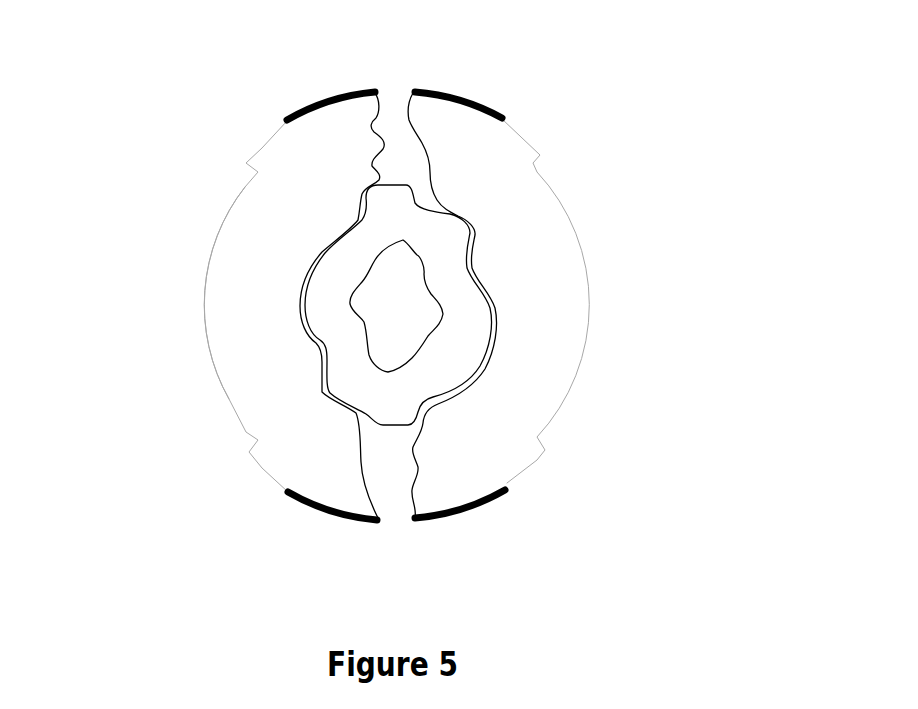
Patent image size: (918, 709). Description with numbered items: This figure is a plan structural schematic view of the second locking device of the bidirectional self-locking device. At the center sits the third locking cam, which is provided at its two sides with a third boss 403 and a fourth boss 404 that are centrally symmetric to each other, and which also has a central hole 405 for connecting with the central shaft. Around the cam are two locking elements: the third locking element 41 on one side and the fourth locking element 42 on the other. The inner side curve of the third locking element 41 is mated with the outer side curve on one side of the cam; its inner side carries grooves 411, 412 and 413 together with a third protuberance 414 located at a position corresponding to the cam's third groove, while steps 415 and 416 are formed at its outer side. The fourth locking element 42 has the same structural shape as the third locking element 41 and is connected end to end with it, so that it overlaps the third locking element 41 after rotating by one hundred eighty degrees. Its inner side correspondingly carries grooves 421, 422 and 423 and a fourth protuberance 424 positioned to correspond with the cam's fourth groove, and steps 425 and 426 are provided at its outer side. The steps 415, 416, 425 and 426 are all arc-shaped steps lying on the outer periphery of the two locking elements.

The third locking element 41 is at (552, 375).
The fourth locking element 42 is at (262, 387).
The third boss 403 is at (390, 195).
The fourth boss 404 is at (399, 416).
The central hole 405 is at (380, 306).
The groove 411 is at (411, 471).
The groove 412 is at (408, 456).
The groove 413 is at (431, 404).
The third protuberance 414 is at (472, 264).
The step 415 is at (455, 99).
The step 416 is at (455, 515).
The groove 421 is at (377, 125).
The groove 422 is at (383, 153).
The groove 423 is at (364, 194).
The fourth protuberance 424 is at (322, 347).
The step 425 is at (328, 512).
The step 426 is at (352, 94).